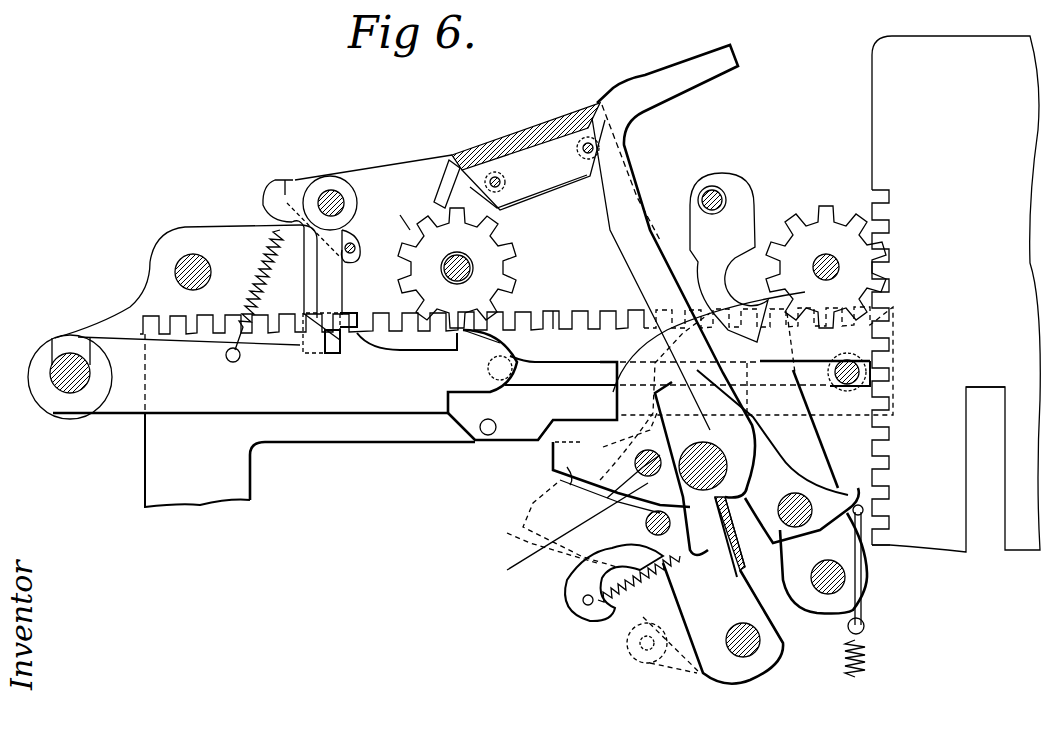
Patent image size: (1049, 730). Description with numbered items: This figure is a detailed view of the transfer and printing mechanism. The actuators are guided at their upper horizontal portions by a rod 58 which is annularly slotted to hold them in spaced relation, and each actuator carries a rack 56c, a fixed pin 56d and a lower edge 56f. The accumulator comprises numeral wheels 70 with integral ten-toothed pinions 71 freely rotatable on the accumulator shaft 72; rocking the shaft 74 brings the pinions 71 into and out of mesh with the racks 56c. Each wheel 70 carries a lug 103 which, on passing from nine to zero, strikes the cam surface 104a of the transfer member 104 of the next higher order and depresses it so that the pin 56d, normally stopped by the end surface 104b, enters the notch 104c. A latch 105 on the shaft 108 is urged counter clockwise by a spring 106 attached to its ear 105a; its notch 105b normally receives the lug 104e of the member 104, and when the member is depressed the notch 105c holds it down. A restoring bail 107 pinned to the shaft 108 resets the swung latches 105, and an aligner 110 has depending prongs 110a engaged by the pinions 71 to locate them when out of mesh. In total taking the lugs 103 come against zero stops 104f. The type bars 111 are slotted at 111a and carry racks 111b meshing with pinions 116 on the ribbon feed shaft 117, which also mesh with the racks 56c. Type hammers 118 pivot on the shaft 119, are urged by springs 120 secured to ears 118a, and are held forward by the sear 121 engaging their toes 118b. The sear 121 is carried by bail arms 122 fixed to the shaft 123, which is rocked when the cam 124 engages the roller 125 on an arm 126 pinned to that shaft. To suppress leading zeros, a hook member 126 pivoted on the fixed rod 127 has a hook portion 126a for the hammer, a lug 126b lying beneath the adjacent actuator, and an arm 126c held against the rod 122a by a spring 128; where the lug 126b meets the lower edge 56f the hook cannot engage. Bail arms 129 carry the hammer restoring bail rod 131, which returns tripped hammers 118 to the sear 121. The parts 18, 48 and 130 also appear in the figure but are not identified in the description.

The lever 18 is at (645, 118).
The pivot pin 48 is at (698, 456).
The actuator rack 56c is at (558, 318).
The pin 56d is at (492, 436).
The lower edge 56f is at (520, 435).
The rod 58 is at (858, 373).
The numeral wheel 70 is at (520, 268).
The pinion 71 is at (494, 258).
The accumulator shaft 72 is at (470, 265).
The shaft 74 is at (190, 254).
The lug 103 is at (405, 232).
The transfer member 104 is at (305, 420).
The cam surface 104a is at (236, 362).
The end surface 104b is at (465, 430).
The notch 104c is at (452, 403).
The lug 104e is at (362, 335).
The zero stop 104f is at (458, 348).
The latch 105 is at (318, 268).
The ear 105a is at (285, 205).
The notch 105b is at (352, 305).
The notch 105c is at (328, 326).
The spring 106 is at (258, 242).
The restoring bail 107 is at (357, 250).
The shaft 108 is at (340, 192).
The aligner 110 is at (500, 140).
The prong 110a is at (445, 185).
The type bar 111 is at (872, 130).
The slot 111a is at (966, 428).
The rack 111b is at (889, 478).
The pinion 116 is at (852, 260).
The ribbon feed shaft 117 is at (838, 268).
The type hammer 118 is at (755, 416).
The ear 118a is at (828, 480).
The toe 118b is at (755, 533).
The shaft 119 is at (818, 480).
The spring 120 is at (868, 645).
The sear 121 is at (723, 590).
The bail arm 122 is at (575, 585).
The rod 122a is at (645, 520).
The shaft 123 is at (760, 645).
The cam 124 is at (507, 533).
The roller 125 is at (627, 645).
The hook member 126 is at (556, 474).
The hook portion 126a is at (745, 348).
The lug 126b is at (565, 470).
The arm 126c is at (650, 575).
The rod 127 is at (570, 527).
The spring 128 is at (592, 608).
The bail arm 129 is at (740, 218).
The link 130 is at (840, 574).
The hammer restoring bail rod 131 is at (716, 196).